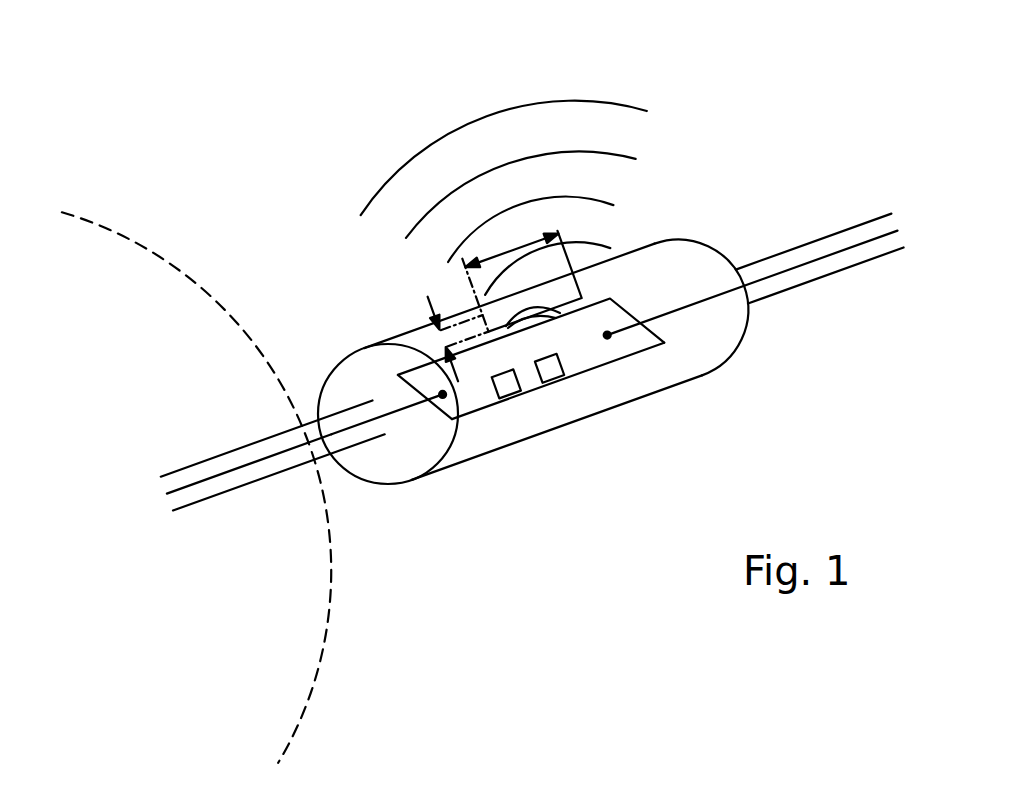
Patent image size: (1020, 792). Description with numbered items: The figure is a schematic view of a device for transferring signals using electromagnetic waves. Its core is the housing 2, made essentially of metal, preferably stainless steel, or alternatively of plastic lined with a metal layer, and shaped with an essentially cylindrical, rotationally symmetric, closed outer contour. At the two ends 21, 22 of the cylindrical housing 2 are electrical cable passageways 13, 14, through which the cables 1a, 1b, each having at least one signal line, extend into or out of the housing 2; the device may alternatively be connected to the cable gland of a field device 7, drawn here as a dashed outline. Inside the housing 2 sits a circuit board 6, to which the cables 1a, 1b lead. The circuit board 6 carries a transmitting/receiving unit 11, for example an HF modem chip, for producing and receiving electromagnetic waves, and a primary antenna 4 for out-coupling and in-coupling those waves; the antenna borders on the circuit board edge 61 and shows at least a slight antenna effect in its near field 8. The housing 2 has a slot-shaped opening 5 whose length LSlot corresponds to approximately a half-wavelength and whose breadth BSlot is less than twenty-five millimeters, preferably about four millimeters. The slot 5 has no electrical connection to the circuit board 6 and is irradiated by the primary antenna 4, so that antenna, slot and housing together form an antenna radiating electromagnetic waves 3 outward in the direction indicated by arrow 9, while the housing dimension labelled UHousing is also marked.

The cable 1a is at (255, 482).
The cable 1b is at (817, 259).
The housing 2 is at (698, 241).
The end of the cylindrical housing 21 is at (358, 505).
The end of the cylindrical housing 22 is at (748, 248).
The electrical cable passageway 13 is at (380, 460).
The electrical cable passageway 14 is at (752, 322).
The radio waves 3 is at (613, 113).
The radiation direction 9 is at (486, 84).
The primary antenna 4 is at (547, 368).
The transmitting/receiving unit 11 is at (507, 383).
The slot-shaped opening 5 is at (606, 286).
The circuit board 6 is at (480, 412).
The circuit board edge 61 is at (580, 292).
The near field 8 is at (566, 334).
The field device 7 is at (157, 253).
The slot length LSlot is at (517, 243).
The slot breadth BSlot is at (438, 333).
The housing circumference UHousing is at (340, 370).